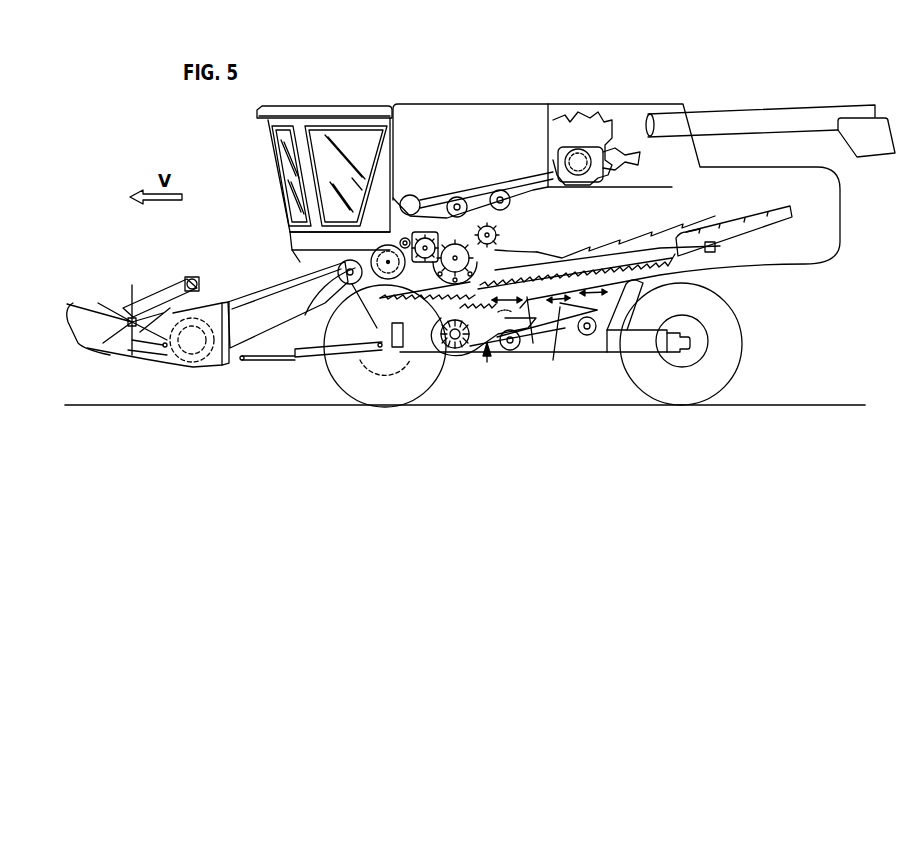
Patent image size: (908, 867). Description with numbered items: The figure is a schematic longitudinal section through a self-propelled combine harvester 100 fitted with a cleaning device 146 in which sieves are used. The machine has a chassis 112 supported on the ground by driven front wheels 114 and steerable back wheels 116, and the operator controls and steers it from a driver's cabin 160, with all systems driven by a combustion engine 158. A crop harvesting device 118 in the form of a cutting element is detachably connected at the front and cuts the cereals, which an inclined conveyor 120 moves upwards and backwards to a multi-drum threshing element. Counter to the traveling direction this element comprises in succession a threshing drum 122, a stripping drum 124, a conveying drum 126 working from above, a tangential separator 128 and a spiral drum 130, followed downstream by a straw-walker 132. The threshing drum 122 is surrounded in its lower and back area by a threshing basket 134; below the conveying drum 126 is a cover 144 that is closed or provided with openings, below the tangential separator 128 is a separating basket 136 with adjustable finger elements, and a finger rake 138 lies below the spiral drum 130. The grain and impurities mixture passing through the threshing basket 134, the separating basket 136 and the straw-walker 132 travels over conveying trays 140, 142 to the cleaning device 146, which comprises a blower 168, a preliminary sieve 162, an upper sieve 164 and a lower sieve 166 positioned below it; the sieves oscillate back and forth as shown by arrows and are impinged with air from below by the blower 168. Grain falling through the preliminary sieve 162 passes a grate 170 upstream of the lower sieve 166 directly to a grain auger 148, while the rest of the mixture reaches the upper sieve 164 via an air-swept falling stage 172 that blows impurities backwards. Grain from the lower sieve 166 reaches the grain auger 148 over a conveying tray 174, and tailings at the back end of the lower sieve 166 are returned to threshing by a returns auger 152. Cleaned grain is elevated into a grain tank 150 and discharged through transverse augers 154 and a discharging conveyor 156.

The combine harvester 100 is at (488, 86).
The chassis 112 is at (556, 340).
The front wheels 114 is at (350, 380).
The back wheels 116 is at (735, 355).
The crop harvesting device 118 is at (195, 362).
The inclined conveyor 120 is at (285, 320).
The threshing drum 122 is at (347, 262).
The stripping drum 124 is at (404, 238).
The conveying drum 126 is at (398, 250).
The tangential separator 128 is at (453, 250).
The spiral drum 130 is at (497, 233).
The straw-walker 132 is at (642, 245).
The threshing basket 134 is at (351, 285).
The separating basket 136 is at (585, 247).
The finger rake 138 is at (537, 253).
The conveying tray 140 is at (407, 295).
The conveying tray 142 is at (632, 263).
The cover 144 is at (447, 300).
The cleaning device 146 is at (488, 362).
The grain auger 148 is at (508, 350).
The grain tank 150 is at (484, 135).
The returns auger 152 is at (590, 336).
The transverse augers 154 is at (495, 196).
The discharging conveyor 156 is at (770, 117).
The combustion engine 158 is at (583, 117).
The driver's cabin 160 is at (349, 176).
The preliminary sieve 162 is at (517, 292).
The upper sieve 164 is at (580, 286).
The lower sieve 166 is at (560, 303).
The blower 168 is at (460, 348).
The grate 170 is at (507, 315).
The falling stage 172 is at (533, 343).
The conveying tray 174 is at (553, 360).